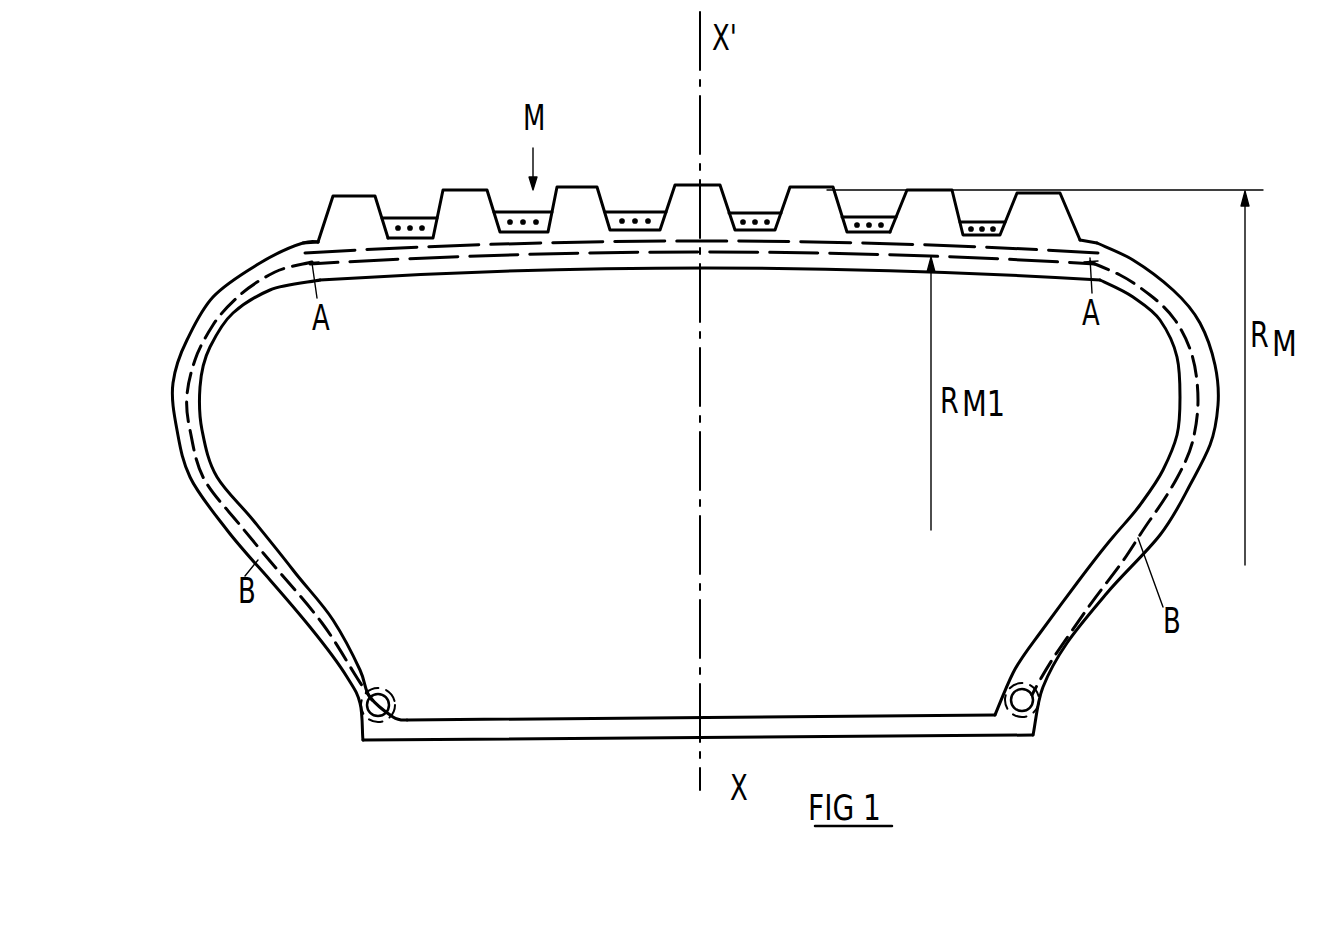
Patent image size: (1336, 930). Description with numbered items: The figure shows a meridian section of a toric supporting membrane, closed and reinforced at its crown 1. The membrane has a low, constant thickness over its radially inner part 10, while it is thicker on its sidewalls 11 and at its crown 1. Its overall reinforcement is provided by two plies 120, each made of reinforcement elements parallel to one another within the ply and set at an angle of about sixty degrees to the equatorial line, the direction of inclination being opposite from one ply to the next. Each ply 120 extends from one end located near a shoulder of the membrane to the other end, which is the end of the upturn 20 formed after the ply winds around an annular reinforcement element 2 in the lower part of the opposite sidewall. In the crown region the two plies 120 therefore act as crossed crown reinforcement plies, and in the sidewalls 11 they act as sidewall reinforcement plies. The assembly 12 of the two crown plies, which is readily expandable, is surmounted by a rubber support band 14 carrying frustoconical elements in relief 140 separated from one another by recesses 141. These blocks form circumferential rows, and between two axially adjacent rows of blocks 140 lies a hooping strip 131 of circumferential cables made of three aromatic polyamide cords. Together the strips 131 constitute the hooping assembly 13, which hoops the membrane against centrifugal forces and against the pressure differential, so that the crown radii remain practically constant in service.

The crown 1 is at (842, 245).
The radially inner part 10 is at (903, 725).
The sidewalls 11 is at (1170, 470).
The assembly of the two crown plies 12 is at (638, 250).
The ply 120 is at (190, 413).
The hooping assembly 13 is at (420, 218).
The hooping strip 131 is at (865, 215).
The rubber support band 14 is at (360, 222).
The frustoconical elements in relief 140 is at (1033, 213).
The recesses 141 is at (638, 202).
The annular reinforcement element 2 is at (385, 700).
The upturn 20 is at (692, 481).